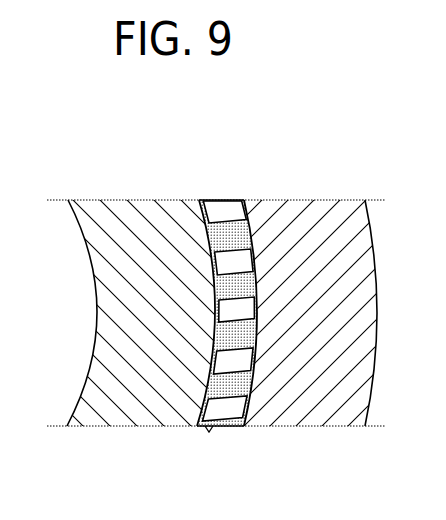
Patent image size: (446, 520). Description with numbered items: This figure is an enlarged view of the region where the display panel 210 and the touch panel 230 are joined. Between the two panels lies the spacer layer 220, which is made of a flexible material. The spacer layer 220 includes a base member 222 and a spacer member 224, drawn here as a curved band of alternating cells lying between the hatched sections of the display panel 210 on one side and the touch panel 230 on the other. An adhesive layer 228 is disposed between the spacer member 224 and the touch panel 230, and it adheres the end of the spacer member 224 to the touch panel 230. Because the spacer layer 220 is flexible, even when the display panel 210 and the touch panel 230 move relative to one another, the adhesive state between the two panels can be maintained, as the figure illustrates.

The display panel 210 is at (133, 410).
The spacer layer 220 is at (221, 431).
The base member 222 is at (203, 210).
The spacer member 224 is at (229, 236).
The adhesive layer 228 is at (262, 236).
The touch panel 230 is at (317, 410).